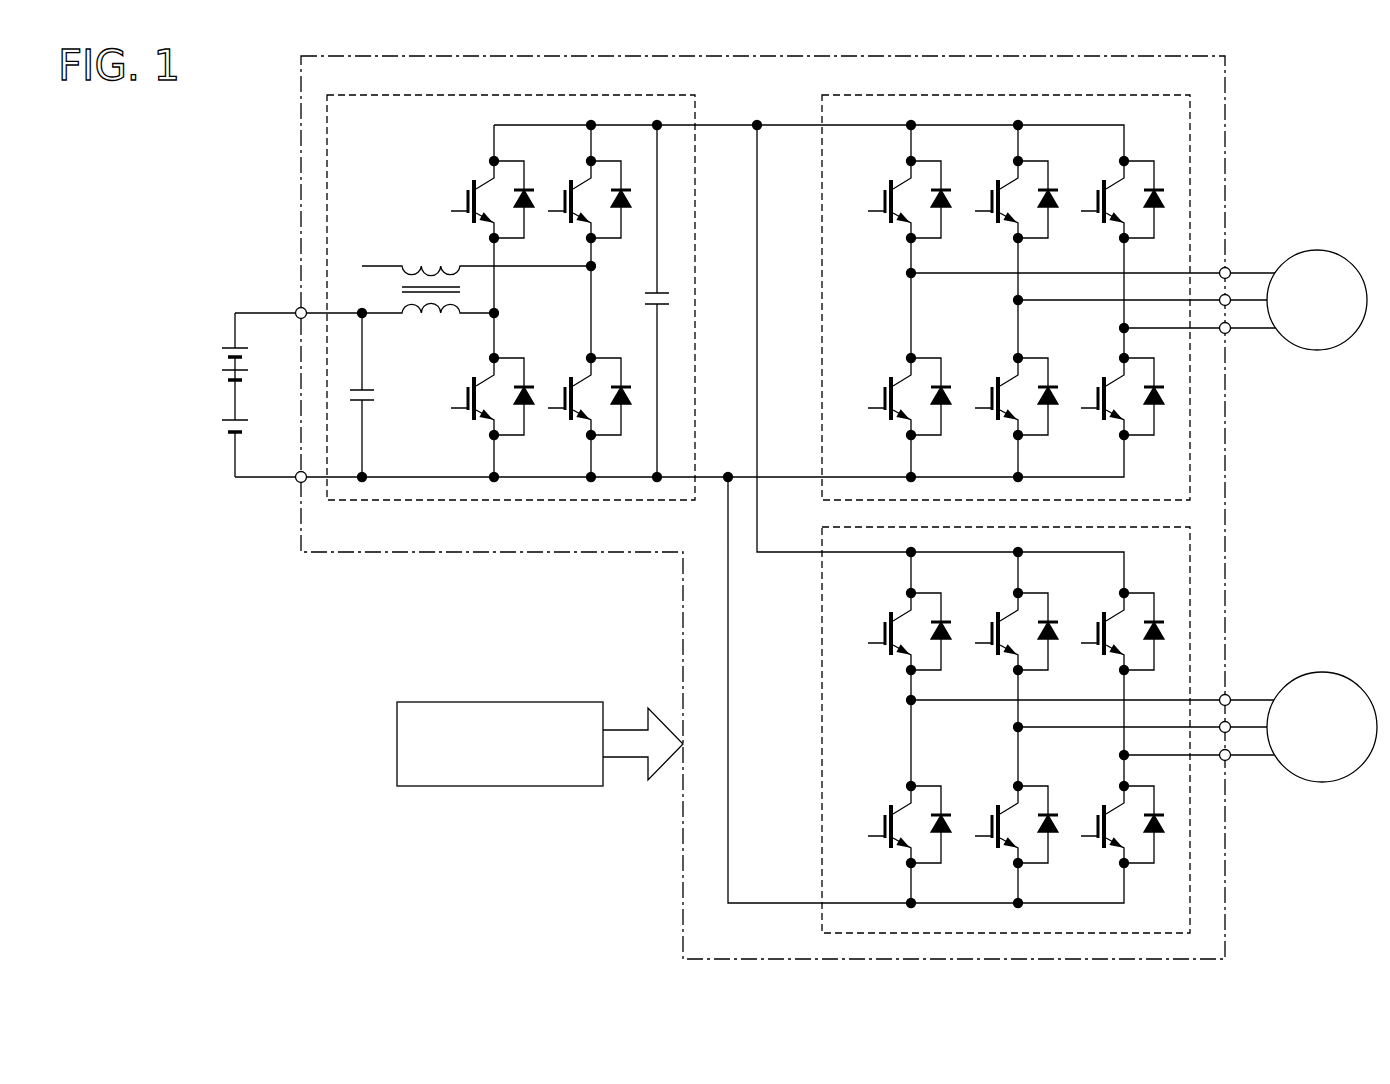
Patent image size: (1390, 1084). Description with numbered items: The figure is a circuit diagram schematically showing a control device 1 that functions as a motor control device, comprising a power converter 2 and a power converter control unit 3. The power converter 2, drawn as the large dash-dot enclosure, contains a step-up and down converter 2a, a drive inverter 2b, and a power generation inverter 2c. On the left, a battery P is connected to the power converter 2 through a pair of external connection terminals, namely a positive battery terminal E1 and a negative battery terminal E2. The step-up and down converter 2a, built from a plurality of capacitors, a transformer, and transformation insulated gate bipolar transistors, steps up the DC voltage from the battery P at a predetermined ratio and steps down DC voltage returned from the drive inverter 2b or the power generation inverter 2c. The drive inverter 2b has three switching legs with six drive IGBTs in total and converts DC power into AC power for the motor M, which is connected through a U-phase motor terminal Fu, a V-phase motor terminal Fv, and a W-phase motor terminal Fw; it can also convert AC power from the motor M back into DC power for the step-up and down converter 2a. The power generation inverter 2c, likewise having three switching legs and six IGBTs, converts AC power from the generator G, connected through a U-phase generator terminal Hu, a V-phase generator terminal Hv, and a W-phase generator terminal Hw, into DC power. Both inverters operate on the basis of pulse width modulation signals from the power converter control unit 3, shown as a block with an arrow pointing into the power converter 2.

The control device 1 is at (290, 127).
The power converter 2 is at (1227, 510).
The step-up and down converter 2a is at (697, 291).
The drive inverter 2b is at (821, 330).
The power generation inverter 2c is at (821, 722).
The power converter control unit 3 is at (397, 722).
The battery P is at (219, 335).
The positive battery terminal E1 is at (297, 307).
The negative battery terminal E2 is at (298, 483).
The U-phase motor terminal Fu is at (1228, 266).
The V-phase motor terminal Fv is at (1233, 304).
The W-phase motor terminal Fw is at (1229, 333).
The U-phase generator terminal Hu is at (1228, 693).
The V-phase generator terminal Hv is at (1233, 731).
The W-phase generator terminal Hw is at (1229, 760).
The motor M is at (1334, 252).
The generator G is at (1336, 677).